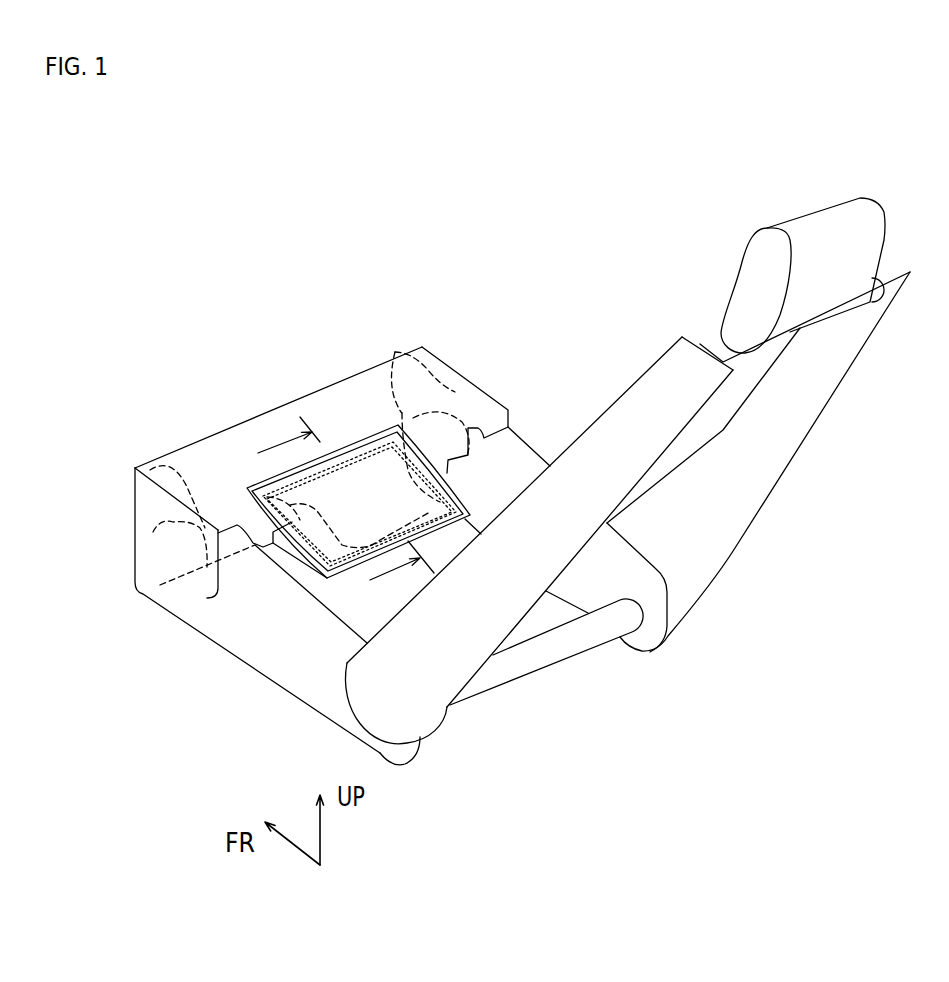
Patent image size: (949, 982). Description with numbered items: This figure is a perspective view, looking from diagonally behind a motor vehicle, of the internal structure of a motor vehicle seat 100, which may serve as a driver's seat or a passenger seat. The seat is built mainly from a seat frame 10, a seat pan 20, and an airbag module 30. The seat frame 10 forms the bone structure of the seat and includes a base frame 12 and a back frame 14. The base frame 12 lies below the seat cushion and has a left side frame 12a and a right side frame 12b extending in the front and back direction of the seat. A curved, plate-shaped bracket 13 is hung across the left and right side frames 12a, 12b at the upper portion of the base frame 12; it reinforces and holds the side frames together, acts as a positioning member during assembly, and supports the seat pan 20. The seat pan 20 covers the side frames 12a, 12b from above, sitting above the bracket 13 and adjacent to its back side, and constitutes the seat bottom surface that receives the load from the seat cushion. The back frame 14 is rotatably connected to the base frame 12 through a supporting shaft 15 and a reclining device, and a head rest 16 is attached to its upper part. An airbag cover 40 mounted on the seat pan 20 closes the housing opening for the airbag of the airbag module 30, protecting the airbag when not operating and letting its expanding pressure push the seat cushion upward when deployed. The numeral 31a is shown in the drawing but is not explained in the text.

The motor vehicle seat 100 is at (534, 207).
The seat frame 10 is at (641, 351).
The base frame 12 is at (277, 699).
The left side frame 12a is at (238, 635).
The right side frame 12b is at (512, 458).
The bracket 13 is at (205, 528).
The back frame 14 is at (738, 561).
The supporting shaft 15 is at (550, 647).
The head rest 16 is at (748, 310).
The seat pan 20 is at (408, 340).
The airbag module 30 is at (350, 472).
The opening of cover member 31a is at (360, 453).
The airbag cover 40 is at (368, 450).